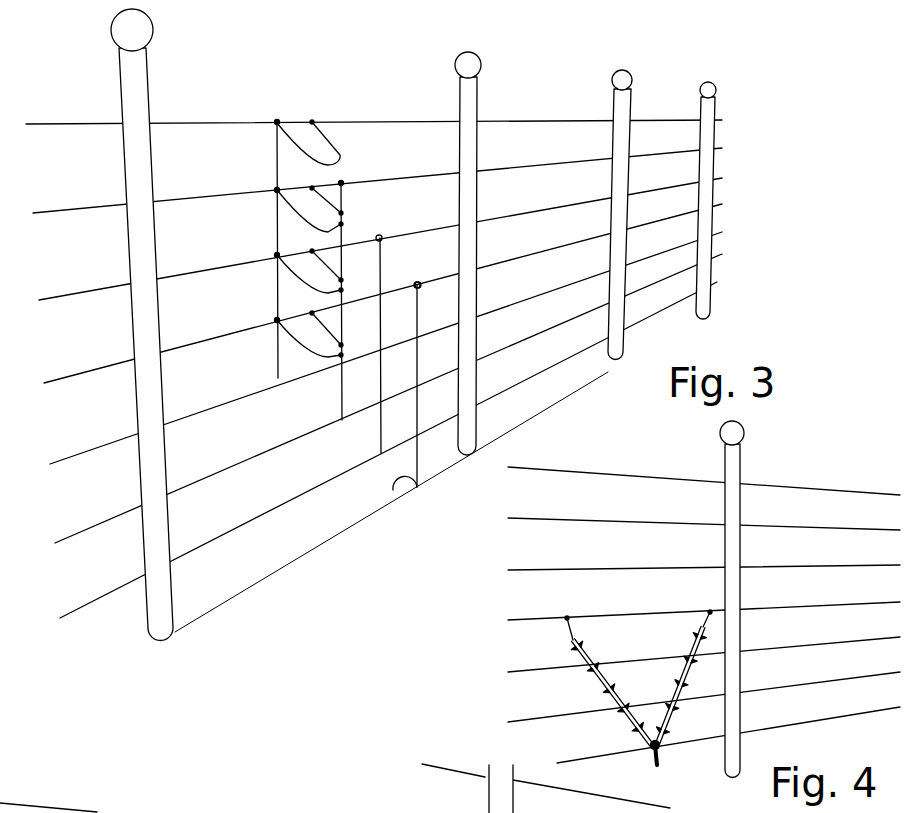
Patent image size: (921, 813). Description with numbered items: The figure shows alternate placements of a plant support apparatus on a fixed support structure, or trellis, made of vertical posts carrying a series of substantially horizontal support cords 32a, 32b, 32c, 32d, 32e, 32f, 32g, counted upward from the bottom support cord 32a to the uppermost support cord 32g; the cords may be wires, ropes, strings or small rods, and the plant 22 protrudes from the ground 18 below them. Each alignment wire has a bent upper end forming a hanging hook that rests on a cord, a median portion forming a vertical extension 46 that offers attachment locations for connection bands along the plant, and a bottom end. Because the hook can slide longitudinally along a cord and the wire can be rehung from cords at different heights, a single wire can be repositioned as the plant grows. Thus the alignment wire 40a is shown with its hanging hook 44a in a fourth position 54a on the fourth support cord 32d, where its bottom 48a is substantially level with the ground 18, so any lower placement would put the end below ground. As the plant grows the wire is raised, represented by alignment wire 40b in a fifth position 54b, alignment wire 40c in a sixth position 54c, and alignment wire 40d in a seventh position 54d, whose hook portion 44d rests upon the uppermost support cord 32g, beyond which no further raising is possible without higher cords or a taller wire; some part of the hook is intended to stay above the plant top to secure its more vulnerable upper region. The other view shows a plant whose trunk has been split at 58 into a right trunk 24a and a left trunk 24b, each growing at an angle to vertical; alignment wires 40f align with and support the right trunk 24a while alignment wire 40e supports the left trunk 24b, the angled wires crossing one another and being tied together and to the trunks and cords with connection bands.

In FIG. 3, the ground 18 is at (250, 588).
In FIG. 4, the plant 22 is at (660, 757).
In FIG. 4, the right trunk 24a is at (688, 657).
In FIG. 4, the left trunk 24b is at (606, 684).
In FIG. 3, the bottom support cord 32a is at (261, 517).
In FIG. 3, the support cord 32b is at (254, 459).
In FIG. 3, the support cord 32c is at (249, 395).
In FIG. 3, the fourth support cord 32d is at (248, 330).
In FIG. 4, the fourth support cord 32d is at (36, 810).
In FIG. 3, the support cord 32e is at (247, 262).
In FIG. 3, the support cord 32f is at (247, 191).
In FIG. 3, the uppermost support cord 32g is at (230, 122).
In FIG. 3, the alignment wire 40a is at (419, 321).
In FIG. 3, the alignment wire 40b is at (382, 276).
In FIG. 3, the alignment wire 40c is at (344, 236).
In FIG. 3, the alignment wire 40d is at (276, 171).
In FIG. 4, the alignment wire 40e is at (225, 798).
In FIG. 4, the alignment wires 40f is at (539, 788).
In FIG. 3, the hanging hook 44a is at (417, 289).
In FIG. 3, the hook portion 44d is at (277, 122).
In FIG. 3, the vertical extension 46 is at (292, 273).
In FIG. 3, the bottom of the alignment wire 48a is at (393, 490).
In FIG. 3, the fourth position 54a is at (419, 286).
In FIG. 3, the fifth position 54b is at (379, 237).
In FIG. 3, the sixth position 54c is at (340, 183).
In FIG. 3, the seventh position 54d is at (296, 122).
In FIG. 4, the split 58 is at (642, 746).